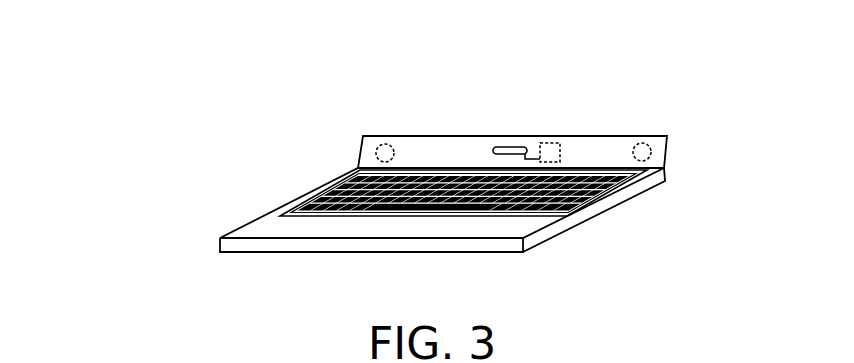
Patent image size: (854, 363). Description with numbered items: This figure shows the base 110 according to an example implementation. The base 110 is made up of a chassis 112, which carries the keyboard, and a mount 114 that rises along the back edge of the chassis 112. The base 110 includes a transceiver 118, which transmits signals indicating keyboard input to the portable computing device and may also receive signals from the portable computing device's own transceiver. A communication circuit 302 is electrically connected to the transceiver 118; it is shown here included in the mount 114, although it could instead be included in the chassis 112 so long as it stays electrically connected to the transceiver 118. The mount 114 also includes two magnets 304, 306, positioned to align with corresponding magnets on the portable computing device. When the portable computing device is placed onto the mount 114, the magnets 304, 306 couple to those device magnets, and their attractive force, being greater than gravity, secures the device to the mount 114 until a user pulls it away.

The base 110 is at (190, 241).
The chassis 112 is at (260, 217).
The mount 114 is at (362, 157).
The transceiver 118 is at (505, 146).
The communication circuit 302 is at (548, 143).
The magnet 304 is at (378, 143).
The magnet 306 is at (637, 144).